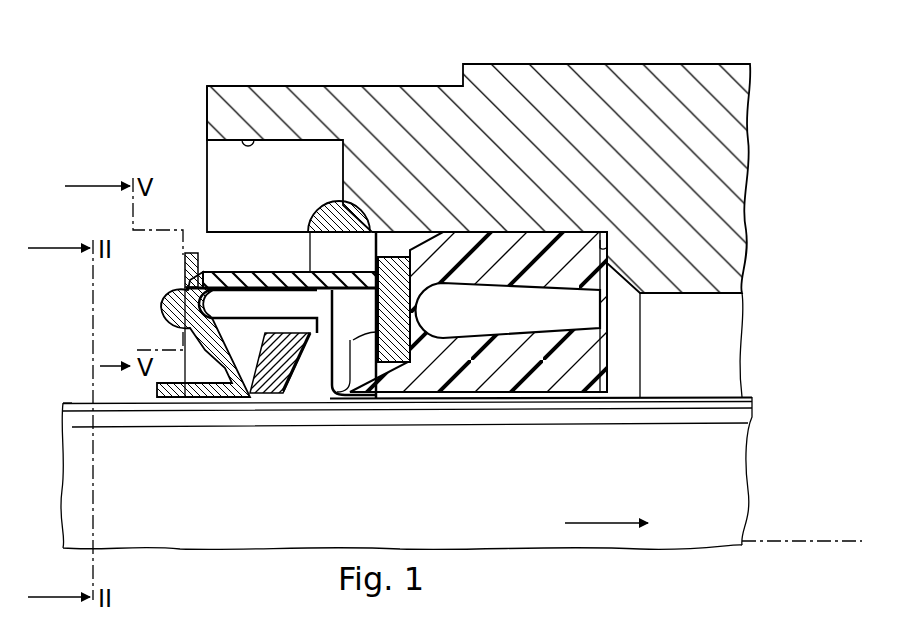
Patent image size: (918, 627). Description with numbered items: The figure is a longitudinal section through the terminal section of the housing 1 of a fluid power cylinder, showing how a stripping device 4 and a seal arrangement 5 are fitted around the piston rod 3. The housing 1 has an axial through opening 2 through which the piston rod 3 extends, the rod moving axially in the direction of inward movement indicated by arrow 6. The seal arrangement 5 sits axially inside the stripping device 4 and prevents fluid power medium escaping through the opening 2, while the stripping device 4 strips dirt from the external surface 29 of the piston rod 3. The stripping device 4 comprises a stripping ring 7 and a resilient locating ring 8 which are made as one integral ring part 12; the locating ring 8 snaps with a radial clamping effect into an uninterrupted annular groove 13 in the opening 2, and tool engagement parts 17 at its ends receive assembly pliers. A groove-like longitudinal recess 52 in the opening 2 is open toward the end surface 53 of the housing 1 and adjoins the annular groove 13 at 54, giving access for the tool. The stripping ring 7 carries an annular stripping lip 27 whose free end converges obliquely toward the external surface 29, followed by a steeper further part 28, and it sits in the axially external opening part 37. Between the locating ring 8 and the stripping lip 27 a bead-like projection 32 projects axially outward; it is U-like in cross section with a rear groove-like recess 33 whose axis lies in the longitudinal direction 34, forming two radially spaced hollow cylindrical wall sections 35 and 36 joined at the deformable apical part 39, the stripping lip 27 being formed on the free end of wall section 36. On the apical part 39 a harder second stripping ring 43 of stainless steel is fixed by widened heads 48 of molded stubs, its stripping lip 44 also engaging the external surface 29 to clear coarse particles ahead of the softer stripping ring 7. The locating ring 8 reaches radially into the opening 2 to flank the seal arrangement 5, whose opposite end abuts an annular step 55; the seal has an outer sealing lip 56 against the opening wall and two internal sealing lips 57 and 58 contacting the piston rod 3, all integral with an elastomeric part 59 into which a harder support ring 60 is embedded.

The housing 1 is at (656, 88).
The through opening 2 is at (462, 240).
The piston rod 3 is at (745, 412).
The stripping device 4 is at (298, 228).
The seal arrangement 5 is at (513, 252).
The direction of inward movement 6 is at (600, 526).
The stripping ring 7 is at (250, 398).
The locating ring 8 is at (357, 208).
The ring part 12 is at (322, 398).
The annular groove 13 is at (330, 200).
The tool engagement part 17 is at (325, 297).
The stripping lip 27 is at (278, 398).
The steeper further part 28 is at (292, 398).
The external surface 29 is at (71, 402).
The bead-like projection 32 is at (216, 274).
The groove-like recess 33 is at (257, 240).
The longitudinal direction 34 is at (844, 543).
The external wall section 35 is at (270, 240).
The internal wall section 36 is at (240, 398).
The opening part 37 is at (242, 238).
The apical part 39 is at (174, 296).
The second stripping ring 43 is at (188, 325).
The stripping lip 44 is at (184, 398).
The widened heads 48 is at (172, 310).
The longitudinal recess 52 is at (248, 140).
The end surface 53 is at (203, 117).
The junction of recess and annular groove 54 is at (318, 185).
The annular step 55 is at (608, 240).
The outer sealing lip 56 is at (575, 243).
The internal sealing lip 57 is at (347, 398).
The internal sealing lip 58 is at (581, 375).
The elastomeric part 59 is at (458, 365).
The support ring 60 is at (400, 398).